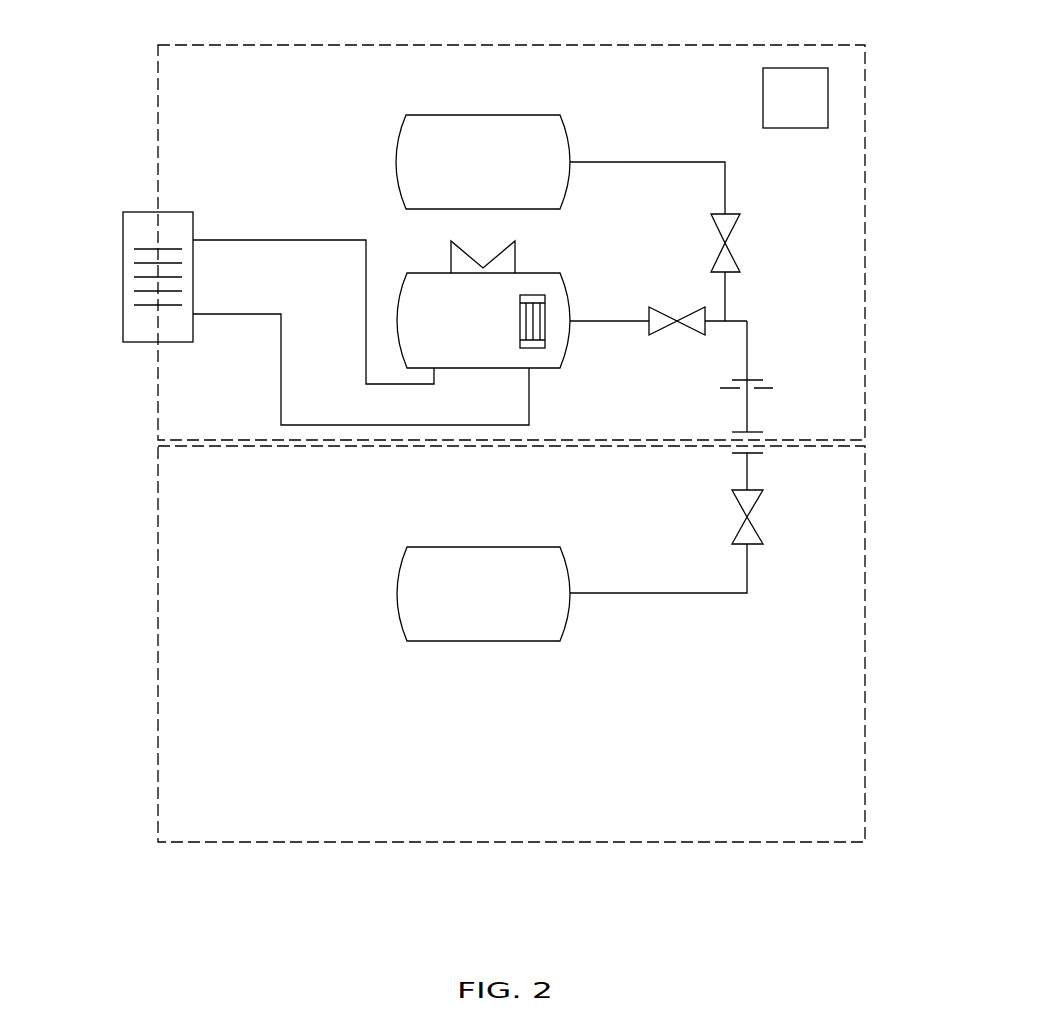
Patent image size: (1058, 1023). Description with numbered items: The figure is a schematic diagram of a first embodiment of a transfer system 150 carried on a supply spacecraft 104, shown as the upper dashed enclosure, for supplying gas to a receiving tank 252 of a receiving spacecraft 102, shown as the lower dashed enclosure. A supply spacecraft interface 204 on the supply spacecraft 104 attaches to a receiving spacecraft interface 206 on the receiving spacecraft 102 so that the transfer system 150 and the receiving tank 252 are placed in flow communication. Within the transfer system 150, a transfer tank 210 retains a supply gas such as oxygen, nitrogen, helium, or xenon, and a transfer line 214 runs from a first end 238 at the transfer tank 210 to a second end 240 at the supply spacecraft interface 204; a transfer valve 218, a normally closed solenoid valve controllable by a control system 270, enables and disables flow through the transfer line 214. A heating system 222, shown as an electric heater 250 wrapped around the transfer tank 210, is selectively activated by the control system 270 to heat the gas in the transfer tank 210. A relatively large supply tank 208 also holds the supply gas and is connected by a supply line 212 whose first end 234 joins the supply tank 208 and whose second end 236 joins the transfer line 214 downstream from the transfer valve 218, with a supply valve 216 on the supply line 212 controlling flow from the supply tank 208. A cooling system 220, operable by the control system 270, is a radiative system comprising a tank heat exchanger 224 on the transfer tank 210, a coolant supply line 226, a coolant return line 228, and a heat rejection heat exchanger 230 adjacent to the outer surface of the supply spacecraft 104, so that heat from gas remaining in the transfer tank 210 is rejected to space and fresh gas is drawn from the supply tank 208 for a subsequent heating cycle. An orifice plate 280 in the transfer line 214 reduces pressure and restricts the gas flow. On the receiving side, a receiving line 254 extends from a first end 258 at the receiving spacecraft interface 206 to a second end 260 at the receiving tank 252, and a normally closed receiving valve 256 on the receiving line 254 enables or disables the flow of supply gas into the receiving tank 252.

The transfer system 150 is at (128, 55).
The supply spacecraft 104 is at (737, 45).
The receiving spacecraft 102 is at (867, 642).
The control system 270 is at (763, 98).
The supply tank 208 is at (455, 115).
The transfer tank 210 is at (407, 272).
The tank heat exchanger 224 is at (513, 243).
The heating system 222 is at (532, 295).
The electric heater 250 is at (537, 310).
The heat rejection heat exchanger 230 is at (146, 211).
The coolant return line 228 is at (280, 239).
The coolant supply line 226 is at (265, 318).
The cooling system 220 is at (185, 388).
The first end of supply line 234 is at (573, 162).
The supply line 212 is at (663, 162).
The supply valve 216 is at (731, 214).
The second end of supply line 236 is at (727, 320).
The first end of transfer line 238 is at (572, 330).
The transfer valve 218 is at (655, 335).
The transfer line 214 is at (747, 352).
The second end of transfer line 240 is at (752, 428).
The orifice plate 280 is at (723, 387).
The supply spacecraft interface 204 is at (755, 432).
The receiving spacecraft interface 206 is at (758, 453).
The first end of receiving line 258 is at (750, 465).
The receiving valve 256 is at (757, 548).
The receiving line 254 is at (668, 593).
The second end of receiving line 260 is at (573, 600).
The receiving tank 252 is at (455, 642).